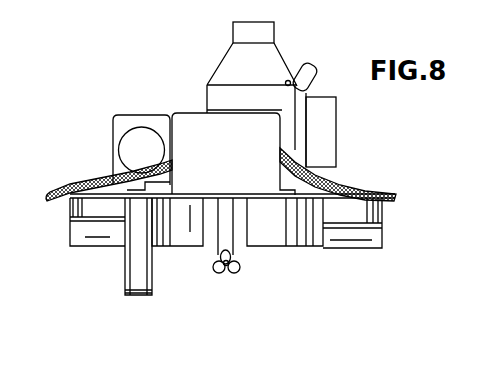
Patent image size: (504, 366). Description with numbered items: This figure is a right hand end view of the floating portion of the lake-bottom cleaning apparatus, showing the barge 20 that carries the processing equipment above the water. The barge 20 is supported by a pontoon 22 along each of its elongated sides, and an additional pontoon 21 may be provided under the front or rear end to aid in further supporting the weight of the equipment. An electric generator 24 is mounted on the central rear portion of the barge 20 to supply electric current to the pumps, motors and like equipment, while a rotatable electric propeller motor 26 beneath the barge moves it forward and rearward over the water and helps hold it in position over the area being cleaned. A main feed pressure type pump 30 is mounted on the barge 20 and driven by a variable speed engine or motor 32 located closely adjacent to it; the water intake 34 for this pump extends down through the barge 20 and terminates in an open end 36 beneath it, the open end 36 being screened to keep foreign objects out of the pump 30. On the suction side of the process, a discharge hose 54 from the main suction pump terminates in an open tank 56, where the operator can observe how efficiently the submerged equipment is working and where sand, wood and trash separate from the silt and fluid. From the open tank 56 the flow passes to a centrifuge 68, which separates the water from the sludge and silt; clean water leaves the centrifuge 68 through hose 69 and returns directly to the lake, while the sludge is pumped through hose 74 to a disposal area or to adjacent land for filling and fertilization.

The barge 20 is at (390, 200).
The pontoon 21 is at (176, 238).
The pontoon 22 is at (80, 237).
The electric generator 24 is at (190, 116).
The rotatable electric propeller motor 26 is at (218, 256).
The main feed pressure type pump 30 is at (126, 116).
The variable speed engine or motor 32 is at (128, 152).
The water intake 34 is at (132, 264).
The open end 36 is at (136, 296).
The discharge hose 54 is at (313, 67).
The open tank 56 is at (330, 113).
The centrifuge 68 is at (229, 59).
The hose 69 is at (361, 190).
The hose 74 is at (62, 183).